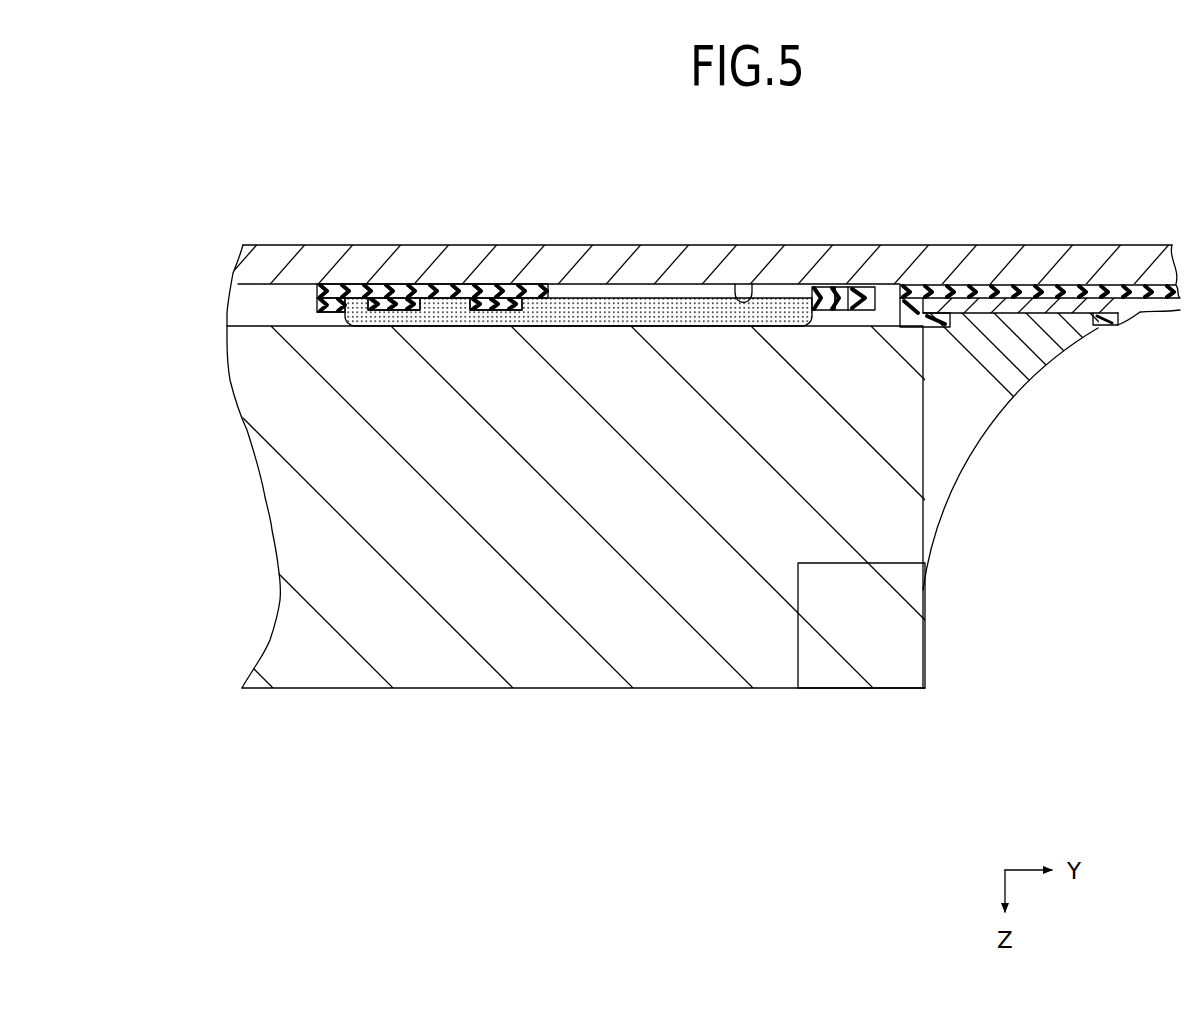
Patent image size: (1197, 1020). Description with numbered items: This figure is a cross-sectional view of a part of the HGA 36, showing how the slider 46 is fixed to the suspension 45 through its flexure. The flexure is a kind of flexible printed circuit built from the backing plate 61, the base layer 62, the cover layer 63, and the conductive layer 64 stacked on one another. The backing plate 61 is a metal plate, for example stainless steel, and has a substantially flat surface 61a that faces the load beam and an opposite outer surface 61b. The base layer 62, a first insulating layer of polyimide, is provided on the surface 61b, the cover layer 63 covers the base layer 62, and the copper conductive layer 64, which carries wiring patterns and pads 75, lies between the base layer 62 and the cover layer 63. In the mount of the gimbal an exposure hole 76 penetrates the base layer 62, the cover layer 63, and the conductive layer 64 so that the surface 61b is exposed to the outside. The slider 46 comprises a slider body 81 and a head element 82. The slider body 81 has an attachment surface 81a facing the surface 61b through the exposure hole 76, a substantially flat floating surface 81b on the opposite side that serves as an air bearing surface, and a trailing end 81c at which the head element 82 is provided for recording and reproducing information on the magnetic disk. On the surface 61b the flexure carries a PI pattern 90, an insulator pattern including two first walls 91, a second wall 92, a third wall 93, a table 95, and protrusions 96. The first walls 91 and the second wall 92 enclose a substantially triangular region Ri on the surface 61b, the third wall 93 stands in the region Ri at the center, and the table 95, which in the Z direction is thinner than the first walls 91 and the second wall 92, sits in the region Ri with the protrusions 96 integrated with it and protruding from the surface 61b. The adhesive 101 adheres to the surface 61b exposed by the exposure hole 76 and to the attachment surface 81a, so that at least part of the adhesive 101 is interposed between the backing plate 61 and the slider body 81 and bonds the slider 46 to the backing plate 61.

The HGA 36 is at (276, 82).
The suspension 45 is at (686, 207).
The slider 46 is at (583, 725).
The backing plate 61 is at (696, 275).
The surface 61a is at (902, 300).
The surface 61b is at (245, 285).
The base layer 62 is at (1148, 284).
The cover layer 63 is at (1160, 313).
The conductive layer 64 is at (1060, 448).
The pads 75 is at (1060, 310).
The exposure hole 76 is at (927, 458).
The slider body 81 is at (598, 479).
The attachment surface 81a is at (714, 325).
The floating surface 81b is at (707, 690).
The trailing end 81c is at (936, 542).
The head element 82 is at (888, 673).
The PI pattern 90 is at (328, 314).
The first walls 91 is at (265, 415).
The second wall 92 is at (858, 296).
The third wall 93 is at (822, 296).
The table 95 is at (458, 290).
The protrusions 96 is at (416, 310).
The adhesive 101 is at (648, 305).
The region Ri is at (736, 285).